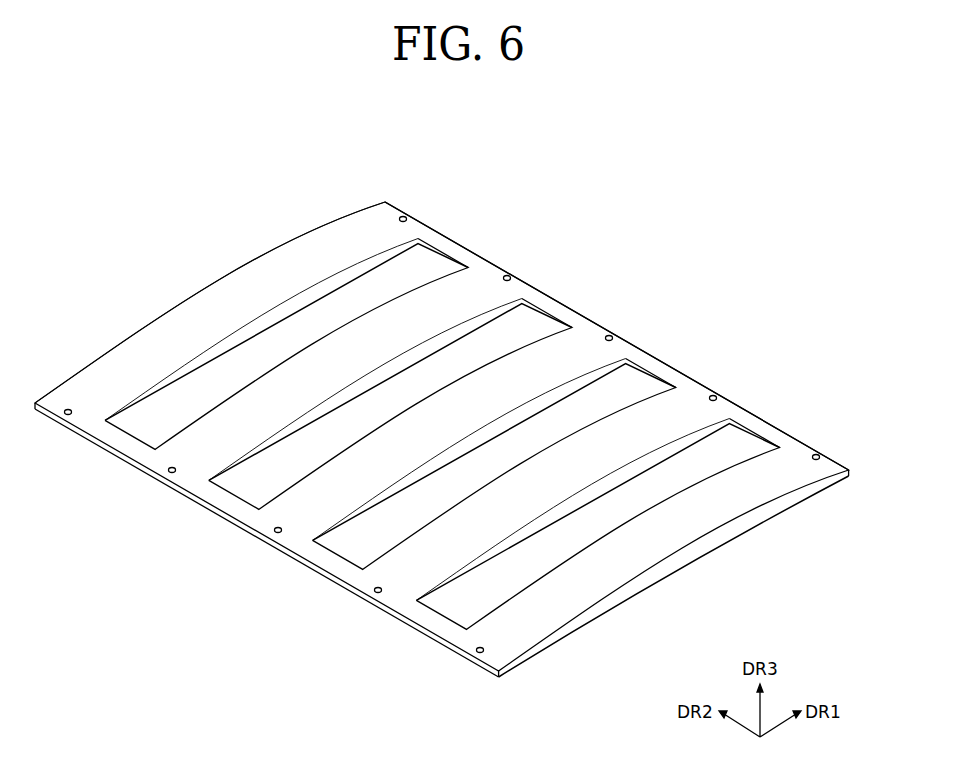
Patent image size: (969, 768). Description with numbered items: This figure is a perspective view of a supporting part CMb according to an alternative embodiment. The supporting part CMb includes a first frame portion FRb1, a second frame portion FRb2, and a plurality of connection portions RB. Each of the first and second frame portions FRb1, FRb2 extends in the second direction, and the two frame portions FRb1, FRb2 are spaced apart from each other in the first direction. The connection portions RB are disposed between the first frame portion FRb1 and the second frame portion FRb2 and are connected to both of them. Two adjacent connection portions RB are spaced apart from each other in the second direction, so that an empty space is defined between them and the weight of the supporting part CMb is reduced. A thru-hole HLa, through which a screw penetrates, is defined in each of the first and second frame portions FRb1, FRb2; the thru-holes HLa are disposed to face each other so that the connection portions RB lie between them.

The supporting part CMb is at (638, 228).
The thru-hole HLa is at (509, 274).
The first frame portion FRb1 is at (434, 622).
The second frame portion FRb2 is at (658, 367).
The connection portion RB is at (407, 390).